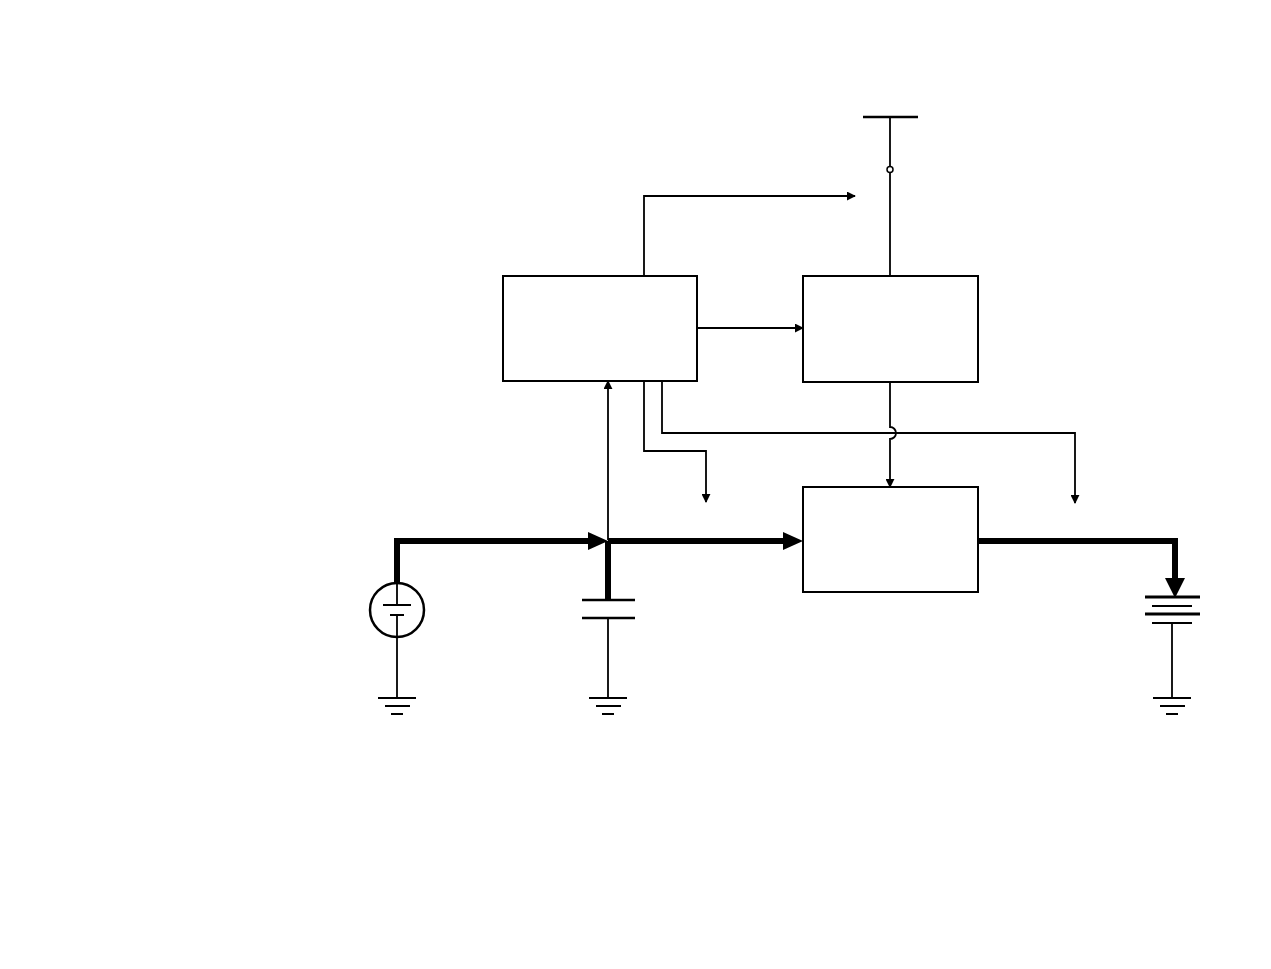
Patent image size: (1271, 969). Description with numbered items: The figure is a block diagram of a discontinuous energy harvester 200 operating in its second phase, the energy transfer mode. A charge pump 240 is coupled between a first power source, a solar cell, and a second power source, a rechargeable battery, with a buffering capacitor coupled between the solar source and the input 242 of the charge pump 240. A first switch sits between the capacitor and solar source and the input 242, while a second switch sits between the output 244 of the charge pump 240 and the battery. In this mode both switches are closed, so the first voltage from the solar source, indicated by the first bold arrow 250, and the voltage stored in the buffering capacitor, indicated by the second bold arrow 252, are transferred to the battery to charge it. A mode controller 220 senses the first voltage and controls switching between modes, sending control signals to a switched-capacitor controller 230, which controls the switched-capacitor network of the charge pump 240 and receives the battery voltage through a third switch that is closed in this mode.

The discontinuous energy harvester 200 is at (283, 56).
The mode controller 220 is at (585, 348).
The switched-capacitor controller 230 is at (875, 348).
The charge pump 240 is at (875, 560).
The input of the charge pump 242 is at (790, 557).
The output of the charge pump 244 is at (991, 557).
The first bold arrow 250 is at (436, 535).
The second bold arrow 252 is at (608, 568).